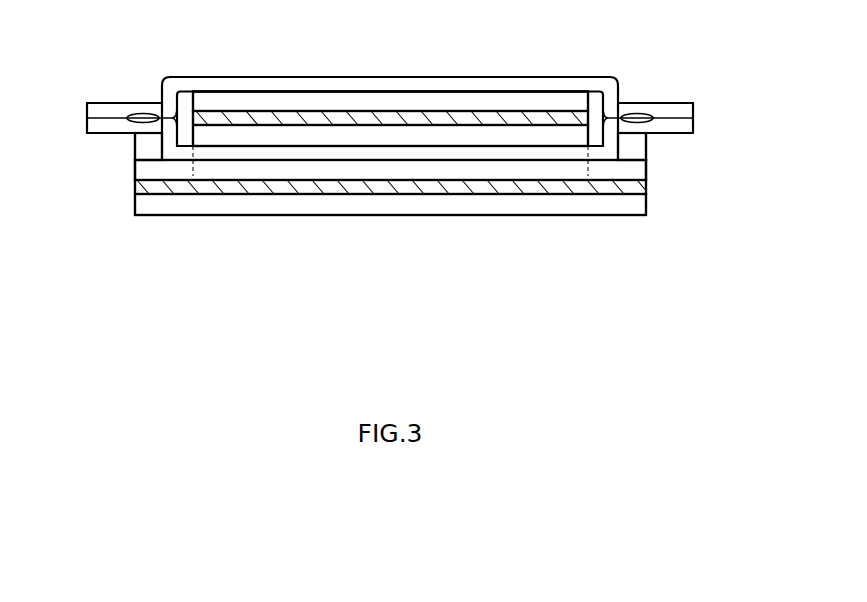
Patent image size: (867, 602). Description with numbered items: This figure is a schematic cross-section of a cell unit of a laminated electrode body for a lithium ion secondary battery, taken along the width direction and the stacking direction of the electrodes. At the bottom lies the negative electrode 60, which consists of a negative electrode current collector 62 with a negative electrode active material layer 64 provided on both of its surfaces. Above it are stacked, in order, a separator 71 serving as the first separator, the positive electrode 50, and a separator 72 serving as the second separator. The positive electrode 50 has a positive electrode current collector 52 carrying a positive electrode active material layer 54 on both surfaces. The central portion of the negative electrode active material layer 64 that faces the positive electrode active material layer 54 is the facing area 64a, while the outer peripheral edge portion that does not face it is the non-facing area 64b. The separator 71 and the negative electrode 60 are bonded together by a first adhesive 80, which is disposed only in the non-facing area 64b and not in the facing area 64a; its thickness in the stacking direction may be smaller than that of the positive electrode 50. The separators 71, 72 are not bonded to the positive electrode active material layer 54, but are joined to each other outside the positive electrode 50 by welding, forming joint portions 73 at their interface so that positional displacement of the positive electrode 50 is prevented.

The positive electrode 50 is at (506, 85).
The positive electrode current collector 52 is at (303, 117).
The positive electrode active material layer 54 is at (232, 133).
The negative electrode 60 is at (498, 224).
The negative electrode current collector 62 is at (142, 192).
The negative electrode active material layer 64 is at (142, 170).
The facing area 64a is at (360, 168).
The non-facing area 64b is at (173, 172).
The separator 71 is at (690, 125).
The separator 72 is at (582, 82).
The joint portion 73 is at (140, 117).
The first adhesive 80 is at (142, 148).